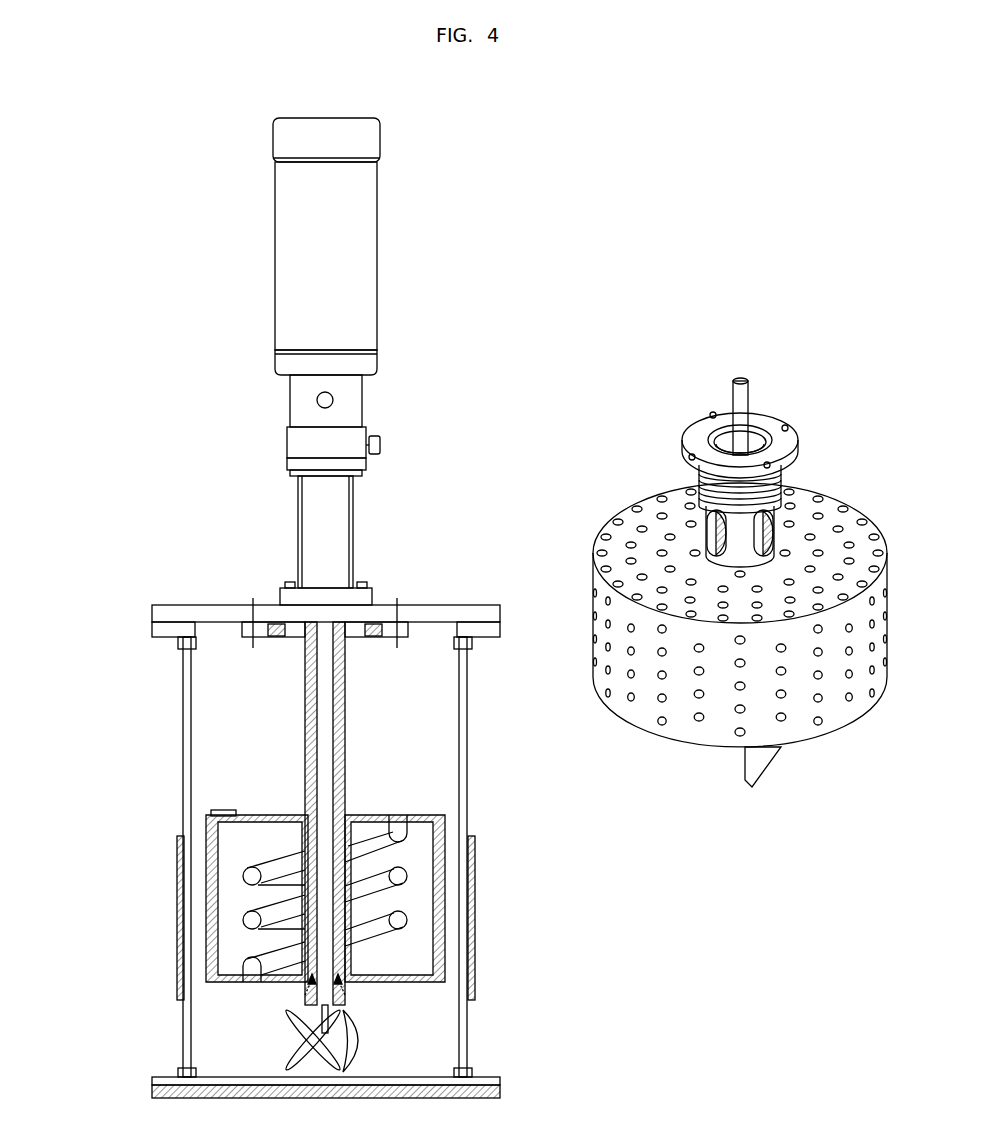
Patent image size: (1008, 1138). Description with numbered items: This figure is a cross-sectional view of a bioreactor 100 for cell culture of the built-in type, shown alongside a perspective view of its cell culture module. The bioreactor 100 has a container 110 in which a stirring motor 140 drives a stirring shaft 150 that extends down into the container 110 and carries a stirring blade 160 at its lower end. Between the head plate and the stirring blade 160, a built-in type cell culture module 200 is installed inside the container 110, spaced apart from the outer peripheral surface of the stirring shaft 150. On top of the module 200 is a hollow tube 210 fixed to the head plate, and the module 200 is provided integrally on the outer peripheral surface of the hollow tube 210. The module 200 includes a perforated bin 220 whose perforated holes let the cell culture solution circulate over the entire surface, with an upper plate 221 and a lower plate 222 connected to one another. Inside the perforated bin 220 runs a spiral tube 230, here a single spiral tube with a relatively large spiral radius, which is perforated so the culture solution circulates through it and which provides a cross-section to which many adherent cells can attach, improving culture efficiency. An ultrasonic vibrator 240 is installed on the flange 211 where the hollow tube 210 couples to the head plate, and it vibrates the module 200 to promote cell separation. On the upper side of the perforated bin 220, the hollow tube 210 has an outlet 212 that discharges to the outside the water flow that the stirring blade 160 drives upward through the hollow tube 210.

The bioreactor for cell culture 100 is at (184, 390).
The container 110 is at (470, 800).
The stirring motor 140 is at (273, 254).
The stirring shaft 150 is at (336, 996).
The stirring blade 160 is at (366, 1030).
The built-in type cell culture module 200 is at (73, 660).
The hollow tube 210 is at (305, 705).
The flange 211 is at (238, 632).
The outlet 212 is at (352, 796).
The perforated bin 220 is at (183, 838).
The upper plate 221 is at (300, 795).
The lower plate 222 is at (250, 985).
The spiral tube 230 is at (244, 877).
The ultrasonic vibrator 240 is at (230, 620).